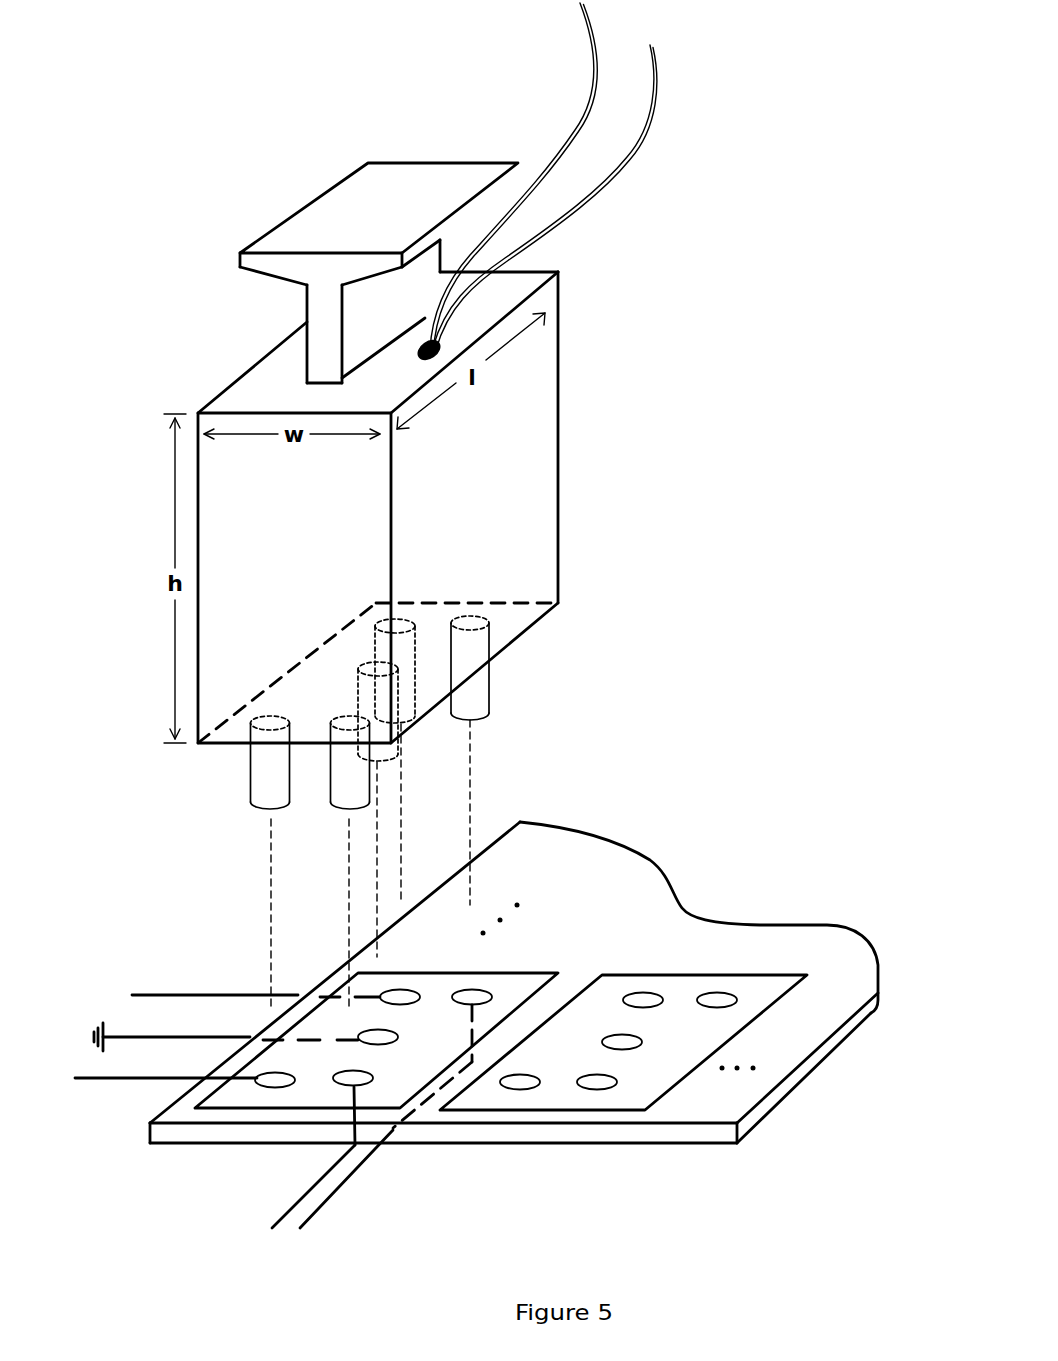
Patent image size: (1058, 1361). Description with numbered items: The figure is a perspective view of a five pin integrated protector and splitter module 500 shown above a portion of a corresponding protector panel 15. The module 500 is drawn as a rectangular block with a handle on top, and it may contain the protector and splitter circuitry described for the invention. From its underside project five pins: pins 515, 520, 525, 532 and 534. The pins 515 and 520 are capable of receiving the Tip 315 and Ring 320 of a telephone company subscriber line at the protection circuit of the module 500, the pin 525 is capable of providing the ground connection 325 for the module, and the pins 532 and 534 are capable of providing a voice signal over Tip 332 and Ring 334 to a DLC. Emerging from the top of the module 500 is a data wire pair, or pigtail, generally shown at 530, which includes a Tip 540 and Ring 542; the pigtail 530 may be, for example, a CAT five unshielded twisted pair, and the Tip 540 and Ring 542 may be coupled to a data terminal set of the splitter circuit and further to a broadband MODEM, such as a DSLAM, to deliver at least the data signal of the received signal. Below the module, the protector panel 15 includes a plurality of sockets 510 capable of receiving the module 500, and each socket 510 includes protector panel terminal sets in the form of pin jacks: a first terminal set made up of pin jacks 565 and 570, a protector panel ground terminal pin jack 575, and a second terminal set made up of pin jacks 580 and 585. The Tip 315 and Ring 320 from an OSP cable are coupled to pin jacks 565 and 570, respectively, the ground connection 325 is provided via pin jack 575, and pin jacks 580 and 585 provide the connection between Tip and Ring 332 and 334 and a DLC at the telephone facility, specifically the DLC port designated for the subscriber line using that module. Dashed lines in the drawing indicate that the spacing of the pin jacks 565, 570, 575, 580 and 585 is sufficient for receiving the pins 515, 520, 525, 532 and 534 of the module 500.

The protector panel 15 is at (563, 868).
The Tip 315 is at (103, 1080).
The Ring 320 is at (167, 993).
The ground connection 325 is at (147, 1037).
The Tip 332 is at (293, 1202).
The Ring 334 is at (320, 1205).
The five pin integrated protector and splitter module 500 is at (255, 501).
The socket 510 is at (537, 973).
The pin 515 is at (251, 783).
The pin 520 is at (403, 619).
The pin 525 is at (367, 668).
The data wire pair (pigtail) 530 is at (670, 226).
The pin 532 is at (339, 804).
The pin 534 is at (477, 619).
The Tip 540 is at (587, 65).
The Ring 542 is at (660, 68).
The pin jack 565 is at (263, 1077).
The pin jack 570 is at (388, 990).
The protector panel ground terminal (pin jack) 575 is at (365, 1037).
The pin jack 580 is at (347, 1077).
The pin jack 585 is at (462, 993).